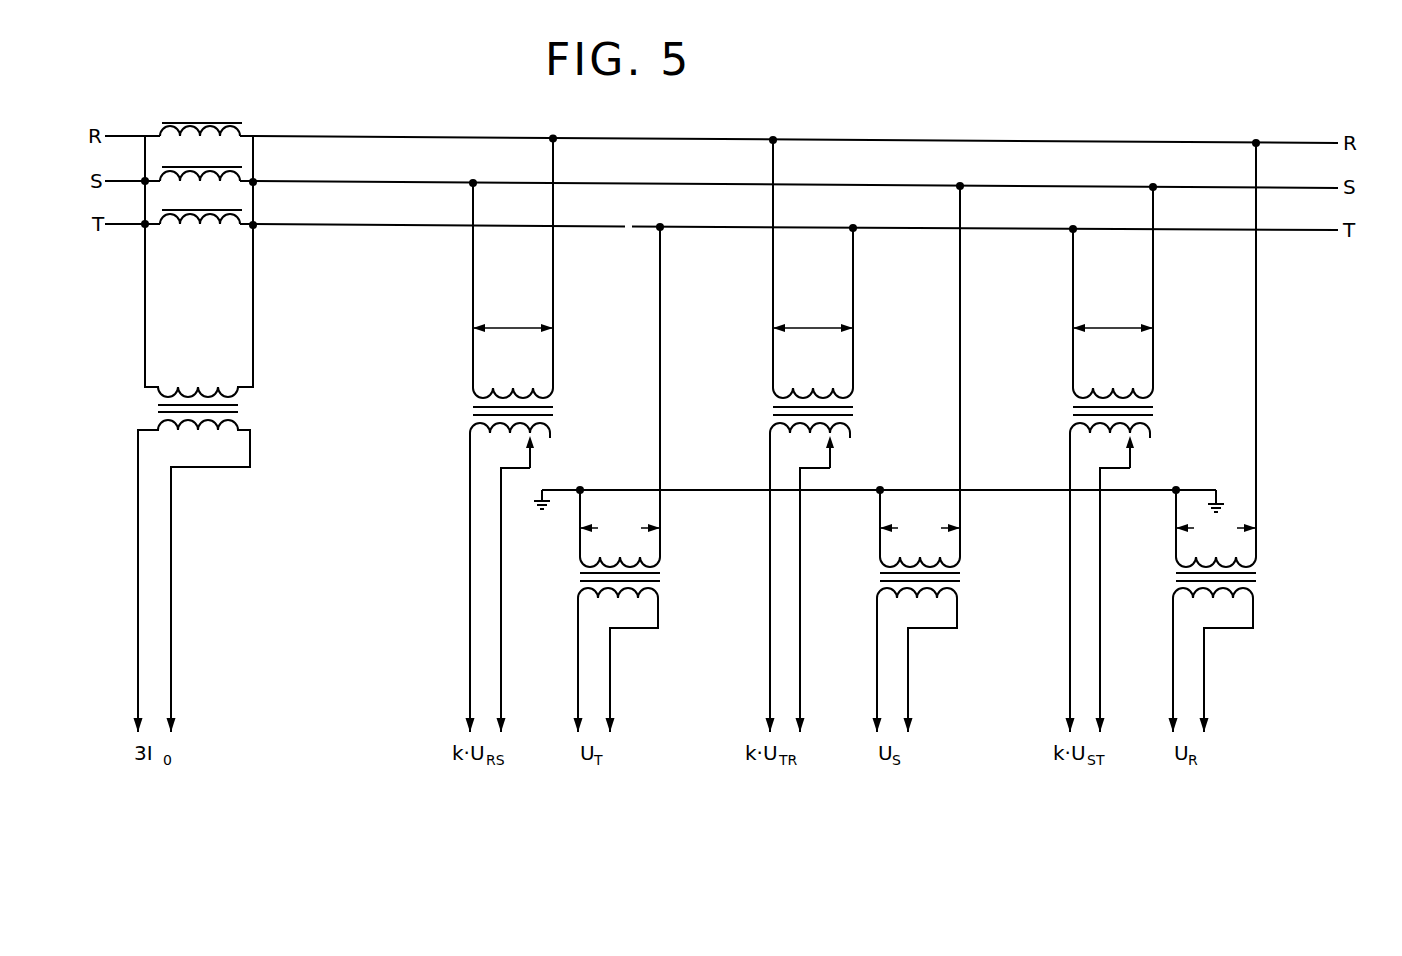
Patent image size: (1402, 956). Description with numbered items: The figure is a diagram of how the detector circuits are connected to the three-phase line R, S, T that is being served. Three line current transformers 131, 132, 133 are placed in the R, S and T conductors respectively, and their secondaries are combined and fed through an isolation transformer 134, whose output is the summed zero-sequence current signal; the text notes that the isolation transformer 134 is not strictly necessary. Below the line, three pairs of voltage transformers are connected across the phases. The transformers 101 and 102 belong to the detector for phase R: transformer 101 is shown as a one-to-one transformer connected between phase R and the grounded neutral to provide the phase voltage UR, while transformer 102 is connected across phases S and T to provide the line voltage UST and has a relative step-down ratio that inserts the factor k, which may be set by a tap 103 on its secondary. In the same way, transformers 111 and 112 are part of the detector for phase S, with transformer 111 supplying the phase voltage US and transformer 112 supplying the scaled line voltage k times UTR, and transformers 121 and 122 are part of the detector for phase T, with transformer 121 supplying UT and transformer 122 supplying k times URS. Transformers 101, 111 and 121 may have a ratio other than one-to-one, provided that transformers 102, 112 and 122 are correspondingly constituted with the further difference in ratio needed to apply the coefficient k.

The line current transformer 131 is at (254, 140).
The line current transformer 132 is at (254, 184).
The line current transformer 133 is at (254, 228).
The isolation transformer 134 is at (243, 410).
The transformer 122 is at (556, 410).
The transformer 121 is at (662, 578).
The transformer 112 is at (855, 411).
The transformer 111 is at (962, 580).
The transformer 102 is at (1156, 414).
The tap 103 is at (1133, 452).
The transformer 101 is at (1259, 582).